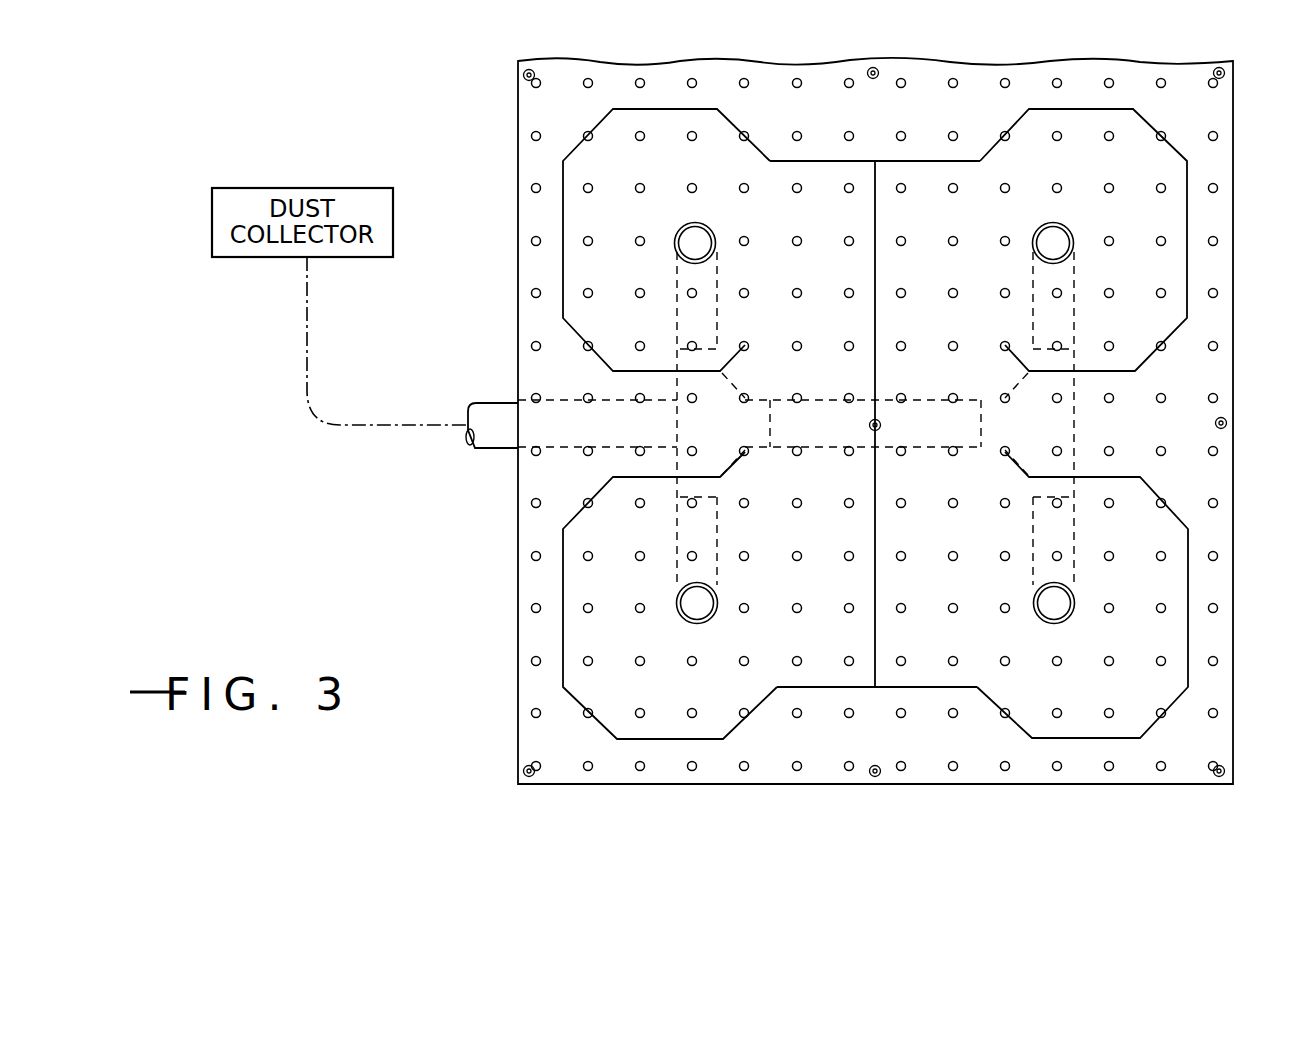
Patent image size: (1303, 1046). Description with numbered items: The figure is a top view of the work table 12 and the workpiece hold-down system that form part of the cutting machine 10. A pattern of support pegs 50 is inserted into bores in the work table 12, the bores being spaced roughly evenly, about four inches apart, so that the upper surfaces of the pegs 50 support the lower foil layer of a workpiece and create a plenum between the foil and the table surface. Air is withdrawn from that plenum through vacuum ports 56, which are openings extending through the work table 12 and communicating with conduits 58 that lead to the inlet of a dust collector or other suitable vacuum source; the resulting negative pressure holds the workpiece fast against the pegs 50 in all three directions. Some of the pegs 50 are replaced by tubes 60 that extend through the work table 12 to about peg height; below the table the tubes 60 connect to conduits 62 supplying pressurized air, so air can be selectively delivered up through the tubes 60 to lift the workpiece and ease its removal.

The cutting machine 10 is at (513, 797).
The work table 12 is at (775, 738).
The support pegs 50 is at (1162, 398).
The vacuum ports 56 is at (676, 609).
The conduits 58 is at (488, 448).
The tubes 60 is at (1003, 135).
The conduits 62 is at (1188, 173).